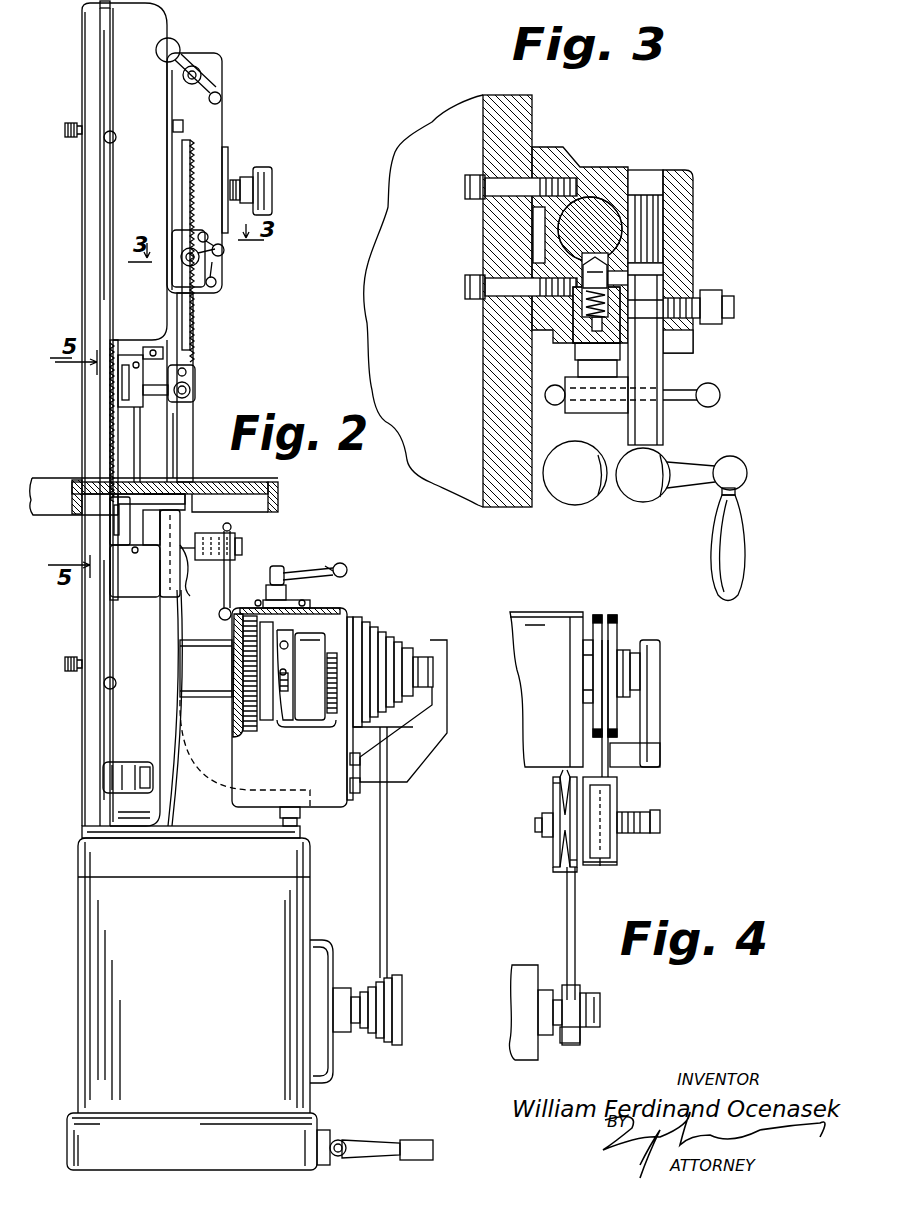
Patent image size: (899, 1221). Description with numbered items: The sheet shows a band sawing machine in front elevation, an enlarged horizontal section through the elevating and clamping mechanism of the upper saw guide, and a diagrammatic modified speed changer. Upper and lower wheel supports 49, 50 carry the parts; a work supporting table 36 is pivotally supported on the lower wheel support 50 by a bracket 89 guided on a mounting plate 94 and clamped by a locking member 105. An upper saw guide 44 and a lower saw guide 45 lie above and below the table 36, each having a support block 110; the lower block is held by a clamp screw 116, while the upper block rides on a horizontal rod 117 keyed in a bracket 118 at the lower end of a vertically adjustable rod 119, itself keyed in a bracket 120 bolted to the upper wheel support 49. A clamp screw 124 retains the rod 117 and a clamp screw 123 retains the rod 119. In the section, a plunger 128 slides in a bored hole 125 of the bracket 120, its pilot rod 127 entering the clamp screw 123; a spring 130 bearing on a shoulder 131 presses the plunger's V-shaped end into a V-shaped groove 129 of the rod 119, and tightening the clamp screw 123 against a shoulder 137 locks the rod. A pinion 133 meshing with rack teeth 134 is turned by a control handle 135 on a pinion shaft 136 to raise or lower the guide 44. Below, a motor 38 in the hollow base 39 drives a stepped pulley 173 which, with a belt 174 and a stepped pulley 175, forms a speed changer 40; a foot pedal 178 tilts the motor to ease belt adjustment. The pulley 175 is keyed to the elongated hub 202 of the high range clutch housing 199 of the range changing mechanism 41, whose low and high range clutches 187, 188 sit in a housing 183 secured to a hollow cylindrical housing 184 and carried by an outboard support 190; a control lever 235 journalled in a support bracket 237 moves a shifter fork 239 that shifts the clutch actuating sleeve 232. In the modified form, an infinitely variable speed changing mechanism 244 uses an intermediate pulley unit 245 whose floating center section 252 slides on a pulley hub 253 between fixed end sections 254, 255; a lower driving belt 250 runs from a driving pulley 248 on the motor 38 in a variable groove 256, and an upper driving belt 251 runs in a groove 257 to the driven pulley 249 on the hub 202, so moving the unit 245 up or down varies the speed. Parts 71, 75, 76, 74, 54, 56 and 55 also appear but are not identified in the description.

In FIG. 2, the column 71 is at (92, 180).
In FIG. 2, the upper wheel support 49 is at (143, 30).
In FIG. 2, the feed lever 75 is at (205, 77).
In FIG. 2, the bracket 120 is at (178, 236).
In FIG. 3, the bracket 120 is at (583, 172).
In FIG. 2, the V-shaped longitudinal groove 129 is at (183, 144).
In FIG. 3, the V-shaped longitudinal groove 129 is at (585, 244).
In FIG. 2, the knob 76 is at (276, 150).
In FIG. 2, the rack teeth 134 is at (208, 327).
In FIG. 3, the rack teeth 134 is at (605, 185).
In FIG. 2, the clamp screw 123 is at (198, 258).
In FIG. 3, the clamp screw 123 is at (580, 412).
In FIG. 2, the control handle 135 is at (225, 252).
In FIG. 3, the control handle 135 is at (737, 551).
In FIG. 2, the vertically adjustable rod 119 is at (178, 310).
In FIG. 3, the vertically adjustable rod 119 is at (570, 223).
In FIG. 2, the bracket 118 is at (190, 368).
In FIG. 2, the clamp screw 124 is at (191, 390).
In FIG. 2, the upper saw band guide 44 is at (92, 381).
In FIG. 2, the horizontal rod 117 is at (155, 400).
In FIG. 2, the work supporting table 36 is at (279, 496).
In FIG. 2, the lower saw band guide 45 is at (171, 497).
In FIG. 2, the support block 110 is at (118, 515).
In FIG. 2, the clamp screw 116 is at (150, 560).
In FIG. 2, the mounting plate 94 is at (232, 527).
In FIG. 2, the locking member 105 is at (243, 546).
In FIG. 2, the bracket 89 is at (195, 580).
In FIG. 2, the lower wheel support 50 is at (118, 705).
In FIG. 2, the window 74 is at (133, 779).
In FIG. 2, the hollow cylindrical housing 184 is at (200, 700).
In FIG. 2, the housing 183 is at (232, 745).
In FIG. 4, the housing 183 is at (525, 630).
In FIG. 2, the low range clutch 187 is at (258, 747).
In FIG. 2, the shifter fork 239 is at (282, 641).
In FIG. 2, the clutch actuating sleeve 232 is at (283, 681).
In FIG. 2, the high range clutch housing 199 is at (310, 640).
In FIG. 2, the high range clutch 188 is at (316, 749).
In FIG. 2, the support bracket 237 is at (262, 592).
In FIG. 2, the control lever 235 is at (326, 566).
In FIG. 2, the stepped pulley 175 is at (400, 650).
In FIG. 2, the range changing mechanism 41 is at (379, 609).
In FIG. 4, the range changing mechanism 41 is at (579, 593).
In FIG. 2, the outboard support 190 is at (436, 720).
In FIG. 2, the belt 174 is at (380, 900).
In FIG. 2, the speed changer 40 is at (410, 881).
In FIG. 2, the base plate 54 is at (224, 819).
In FIG. 2, the flange 56 is at (175, 837).
In FIG. 2, the foot 55 is at (267, 838).
In FIG. 2, the hollow base 39 is at (115, 962).
In FIG. 2, the motor 38 is at (328, 1055).
In FIG. 4, the motor 38 is at (527, 975).
In FIG. 2, the stepped driving pulley 173 is at (400, 1026).
In FIG. 2, the foot pedal 178 is at (414, 1140).
In FIG. 3, the plunger 128 is at (580, 270).
In FIG. 3, the spring 130 is at (585, 302).
In FIG. 3, the pilot rod 127 is at (597, 324).
In FIG. 3, the bored hole 125 is at (612, 262).
In FIG. 3, the pinion 133 is at (647, 200).
In FIG. 3, the shoulder 131 is at (705, 302).
In FIG. 3, the shoulder 137 is at (610, 320).
In FIG. 3, the pinion shaft 136 is at (663, 435).
In FIG. 4, the elongated hub 202 is at (590, 672).
In FIG. 4, the driven pulley 249 is at (610, 625).
In FIG. 4, the upper driving belt 251 is at (606, 740).
In FIG. 4, the intermediate pulley unit 245 is at (633, 851).
In FIG. 4, the end section 255 is at (615, 790).
In FIG. 4, the speed changing mechanism 244 is at (532, 806).
In FIG. 4, the center section 252 is at (562, 790).
In FIG. 4, the pulley hub 253 is at (550, 828).
In FIG. 4, the end section 254 is at (560, 840).
In FIG. 4, the groove 256 is at (554, 875).
In FIG. 4, the groove 257 is at (612, 868).
In FIG. 4, the lower driving belt 250 is at (568, 900).
In FIG. 4, the driving pulley 248 is at (590, 1002).